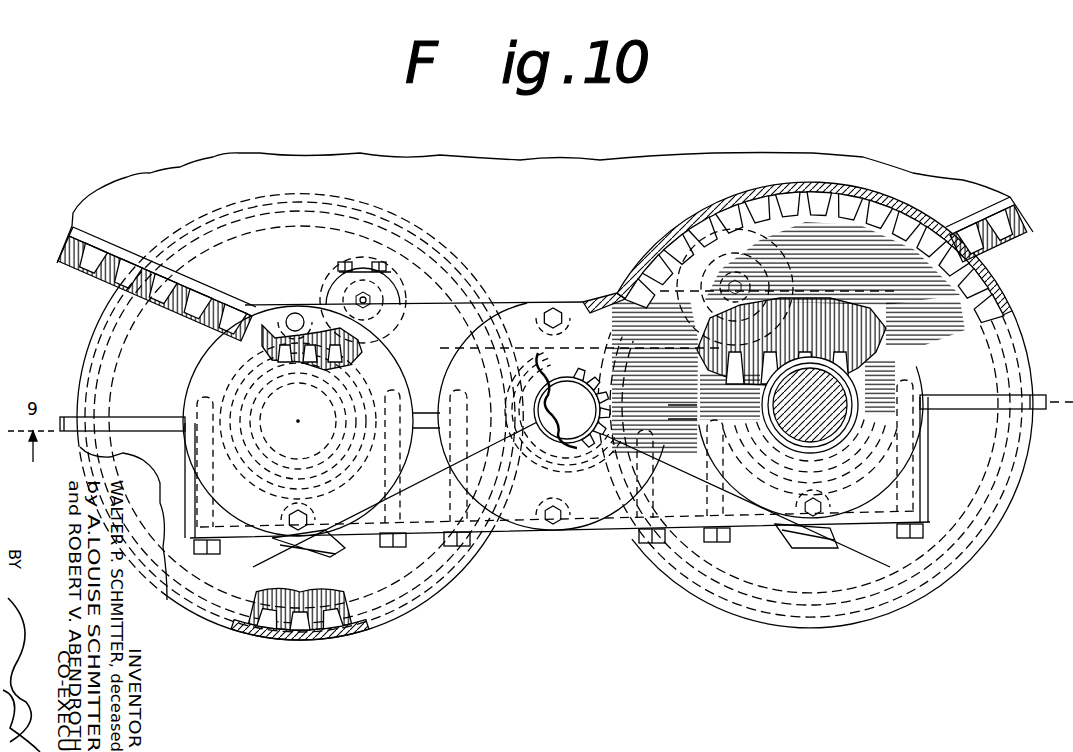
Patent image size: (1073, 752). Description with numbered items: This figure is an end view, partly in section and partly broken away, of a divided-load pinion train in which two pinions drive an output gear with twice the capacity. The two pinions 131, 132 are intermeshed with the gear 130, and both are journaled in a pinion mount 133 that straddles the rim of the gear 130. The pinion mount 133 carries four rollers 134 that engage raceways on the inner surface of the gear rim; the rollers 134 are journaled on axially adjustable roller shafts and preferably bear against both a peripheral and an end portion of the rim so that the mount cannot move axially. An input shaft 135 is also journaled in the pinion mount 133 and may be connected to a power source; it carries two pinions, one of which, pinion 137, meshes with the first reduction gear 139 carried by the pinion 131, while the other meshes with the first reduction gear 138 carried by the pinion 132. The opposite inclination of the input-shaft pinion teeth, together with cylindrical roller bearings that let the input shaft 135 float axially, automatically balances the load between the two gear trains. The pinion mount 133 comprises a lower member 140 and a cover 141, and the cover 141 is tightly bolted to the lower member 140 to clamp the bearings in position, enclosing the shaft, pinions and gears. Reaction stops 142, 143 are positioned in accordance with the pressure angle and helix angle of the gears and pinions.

The gear 130 is at (974, 190).
The pinion 131 is at (883, 365).
The pinion 132 is at (321, 370).
The pinion mount 133 is at (407, 603).
The rollers 134 is at (330, 279).
The input shaft 135 is at (588, 346).
The pinion 137 is at (547, 345).
The first reduction gear 138 is at (301, 612).
The first reduction gear 139 is at (966, 313).
The lower member 140 is at (453, 567).
The cover 141 is at (93, 360).
The reaction stop 142 is at (312, 545).
The reaction stop 143 is at (812, 541).